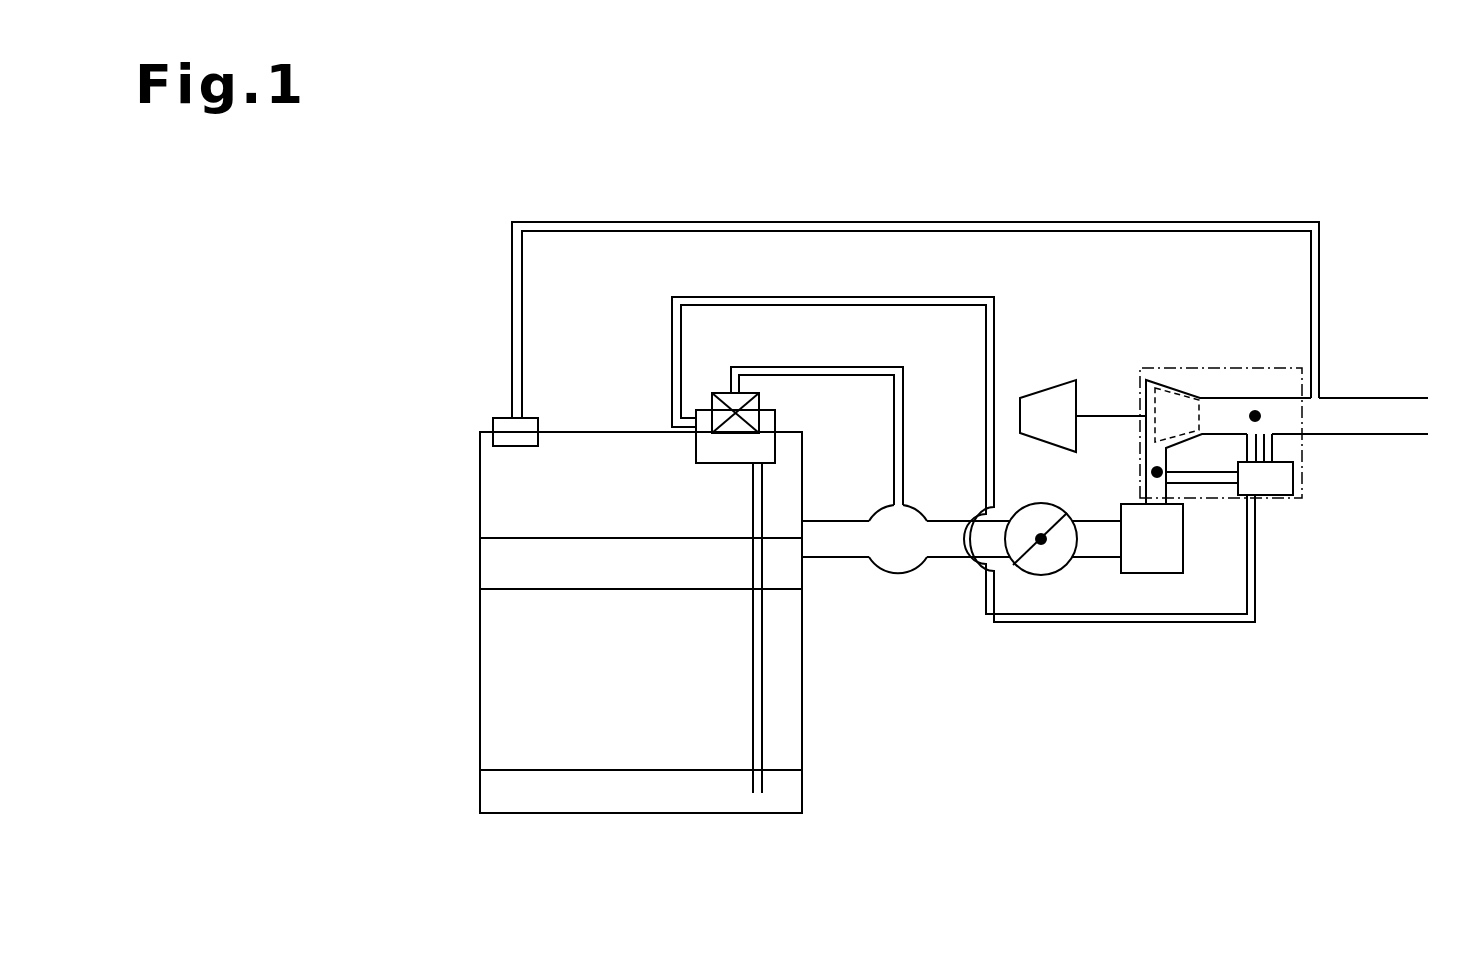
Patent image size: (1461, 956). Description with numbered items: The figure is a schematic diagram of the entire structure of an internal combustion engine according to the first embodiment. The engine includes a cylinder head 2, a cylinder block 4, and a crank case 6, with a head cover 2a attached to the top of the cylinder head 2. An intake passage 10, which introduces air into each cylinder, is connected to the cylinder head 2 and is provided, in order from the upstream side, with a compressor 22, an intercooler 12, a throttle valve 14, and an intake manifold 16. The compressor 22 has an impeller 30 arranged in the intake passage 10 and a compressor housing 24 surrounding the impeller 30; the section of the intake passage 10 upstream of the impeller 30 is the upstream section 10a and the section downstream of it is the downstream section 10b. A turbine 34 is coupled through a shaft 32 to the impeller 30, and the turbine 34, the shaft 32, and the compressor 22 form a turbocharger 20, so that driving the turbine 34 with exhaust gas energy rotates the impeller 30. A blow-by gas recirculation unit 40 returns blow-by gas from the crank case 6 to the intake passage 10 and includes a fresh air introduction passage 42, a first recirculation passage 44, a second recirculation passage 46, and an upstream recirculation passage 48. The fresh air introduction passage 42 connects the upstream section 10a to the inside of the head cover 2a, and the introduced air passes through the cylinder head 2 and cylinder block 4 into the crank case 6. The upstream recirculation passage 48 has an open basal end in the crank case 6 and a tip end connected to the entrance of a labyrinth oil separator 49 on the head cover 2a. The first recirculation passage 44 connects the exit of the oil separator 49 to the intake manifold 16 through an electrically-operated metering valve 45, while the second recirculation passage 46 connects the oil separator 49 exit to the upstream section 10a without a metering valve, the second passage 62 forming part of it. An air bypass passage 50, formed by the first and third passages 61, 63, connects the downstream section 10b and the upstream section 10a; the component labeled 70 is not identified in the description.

The cylinder head 2 is at (480, 565).
The head cover 2a is at (480, 487).
The cylinder block 4 is at (480, 674).
The crank case 6 is at (480, 788).
The intake passage 10 is at (1378, 369).
The upstream section 10a is at (1255, 414).
The downstream section 10b is at (1155, 472).
The intercooler 12 is at (1140, 573).
The throttle valve 14 is at (1030, 558).
The intake manifold 16 is at (893, 574).
The turbocharger 20 is at (1161, 336).
The compressor 22 is at (1220, 377).
The compressor housing 24 is at (1243, 368).
The impeller 30 is at (1168, 373).
The shaft 32 is at (1112, 416).
The turbine 34 is at (1047, 382).
The blow-by gas recirculation unit 40 is at (637, 345).
The fresh air introduction passage 42 is at (1092, 222).
The first recirculation passage 44 is at (904, 400).
The metering valve 45 is at (762, 402).
The second recirculation passage 46 is at (910, 297).
The upstream recirculation passage 48 is at (753, 675).
The oil separator 49 is at (696, 450).
The air bypass passage 50 is at (1260, 448).
The first passage 61 is at (1210, 485).
The second passage 62 is at (1320, 456).
The third passage 63 is at (1343, 453).
The ejector 70 is at (1282, 496).